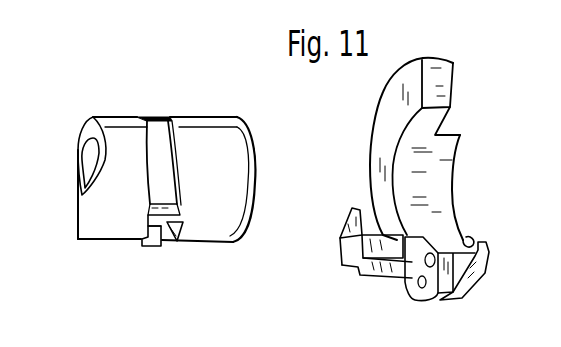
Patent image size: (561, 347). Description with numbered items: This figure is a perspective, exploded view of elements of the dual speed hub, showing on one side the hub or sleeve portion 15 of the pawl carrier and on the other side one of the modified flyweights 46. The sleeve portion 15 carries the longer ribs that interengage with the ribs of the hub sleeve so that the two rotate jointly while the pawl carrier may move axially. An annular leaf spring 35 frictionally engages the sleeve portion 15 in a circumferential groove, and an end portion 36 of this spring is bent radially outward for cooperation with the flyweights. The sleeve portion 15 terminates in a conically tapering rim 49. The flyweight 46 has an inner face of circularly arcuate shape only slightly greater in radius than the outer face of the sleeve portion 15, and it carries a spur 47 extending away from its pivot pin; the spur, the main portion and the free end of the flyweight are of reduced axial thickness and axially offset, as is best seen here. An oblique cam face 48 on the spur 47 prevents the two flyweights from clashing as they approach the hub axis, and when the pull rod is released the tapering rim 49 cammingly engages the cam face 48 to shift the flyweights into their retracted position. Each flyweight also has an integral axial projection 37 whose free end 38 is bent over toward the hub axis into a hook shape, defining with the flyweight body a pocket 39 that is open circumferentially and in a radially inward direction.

The sleeve portion of the pawl carrier 15 is at (105, 190).
The annular leaf spring 35 is at (143, 242).
The end portion of the spring 36 is at (177, 242).
The conically tapering rim 49 is at (237, 120).
The flyweight 46 is at (425, 168).
The pocket 39 is at (387, 248).
The free end of the axial projection 38 is at (343, 262).
The axial projection 37 is at (380, 267).
The spur 47 is at (478, 272).
The oblique cam face 48 is at (467, 245).